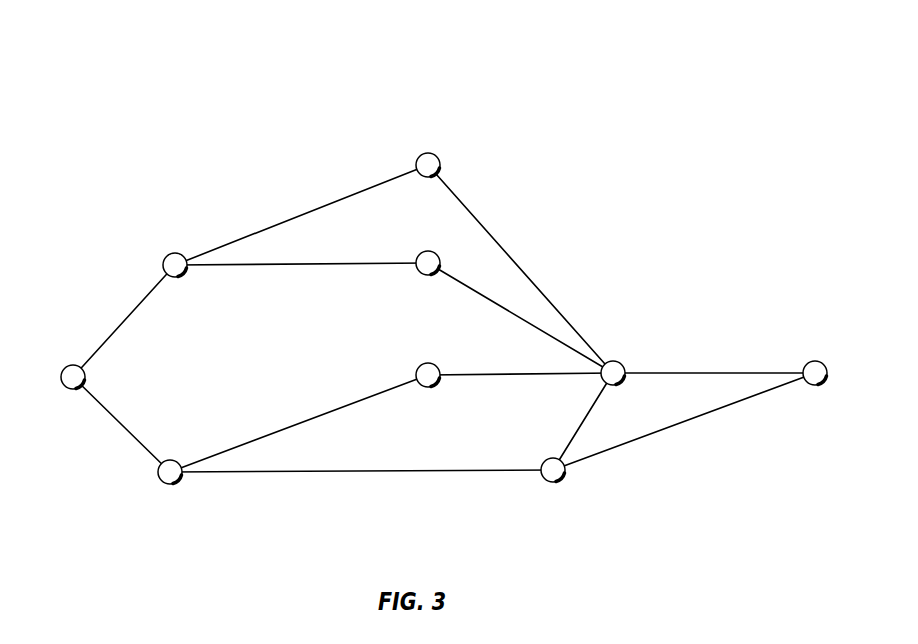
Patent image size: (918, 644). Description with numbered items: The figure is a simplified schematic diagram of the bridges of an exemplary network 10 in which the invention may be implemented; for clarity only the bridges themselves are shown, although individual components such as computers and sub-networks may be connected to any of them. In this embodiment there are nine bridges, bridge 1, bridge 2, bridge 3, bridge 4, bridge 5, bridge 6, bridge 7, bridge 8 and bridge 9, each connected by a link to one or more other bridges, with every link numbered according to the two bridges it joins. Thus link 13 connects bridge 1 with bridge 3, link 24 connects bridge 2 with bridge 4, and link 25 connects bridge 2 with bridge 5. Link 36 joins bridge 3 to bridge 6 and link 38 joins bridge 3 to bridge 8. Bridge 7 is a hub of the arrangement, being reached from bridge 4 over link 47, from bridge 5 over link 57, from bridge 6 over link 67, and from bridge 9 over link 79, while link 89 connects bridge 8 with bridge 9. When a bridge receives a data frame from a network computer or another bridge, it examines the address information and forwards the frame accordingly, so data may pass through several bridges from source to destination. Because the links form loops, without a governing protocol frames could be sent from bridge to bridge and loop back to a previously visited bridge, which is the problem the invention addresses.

The bridge 1 is at (70, 364).
The bridge 2 is at (171, 253).
The bridge 3 is at (170, 485).
The bridge 4 is at (424, 153).
The bridge 5 is at (424, 251).
The bridge 6 is at (432, 387).
The bridge 7 is at (623, 362).
The bridge 8 is at (551, 484).
The bridge 9 is at (820, 362).
The network 10 is at (731, 72).
The link 13 is at (118, 423).
The link 24 is at (303, 213).
The link 25 is at (303, 266).
The link 36 is at (300, 422).
The link 38 is at (392, 472).
The link 47 is at (523, 271).
The link 57 is at (483, 297).
The link 67 is at (520, 373).
The link 79 is at (712, 372).
The link 89 is at (686, 421).